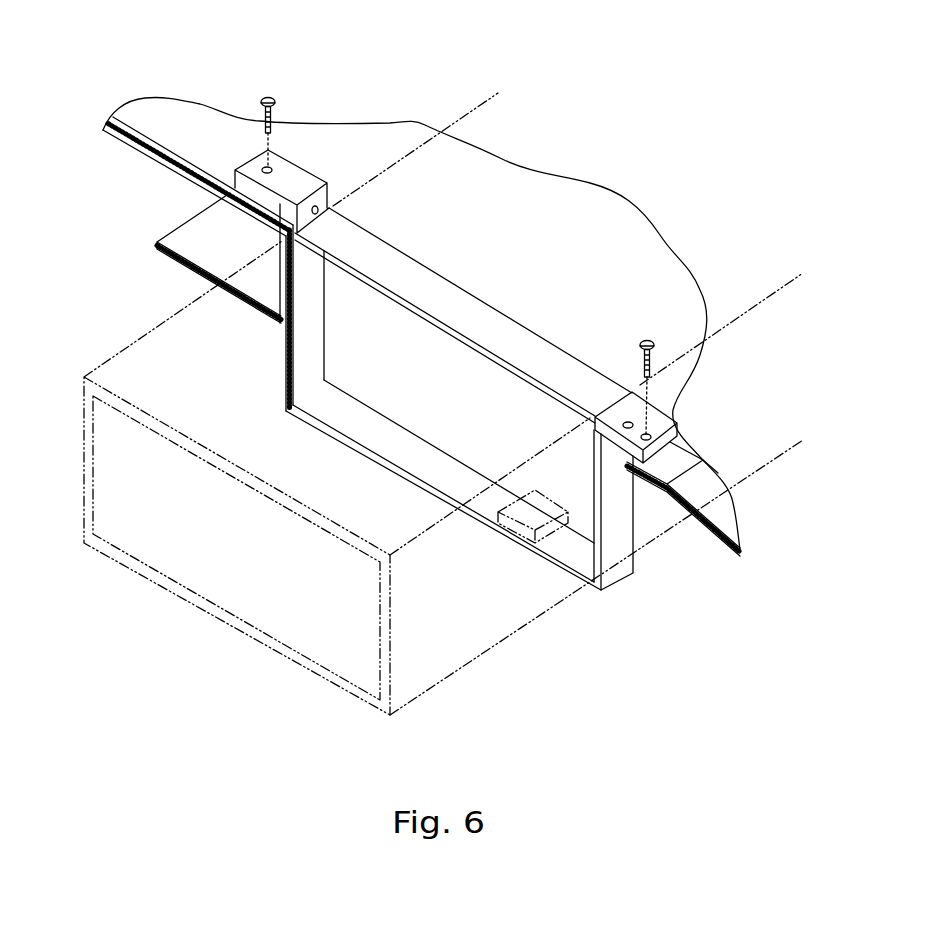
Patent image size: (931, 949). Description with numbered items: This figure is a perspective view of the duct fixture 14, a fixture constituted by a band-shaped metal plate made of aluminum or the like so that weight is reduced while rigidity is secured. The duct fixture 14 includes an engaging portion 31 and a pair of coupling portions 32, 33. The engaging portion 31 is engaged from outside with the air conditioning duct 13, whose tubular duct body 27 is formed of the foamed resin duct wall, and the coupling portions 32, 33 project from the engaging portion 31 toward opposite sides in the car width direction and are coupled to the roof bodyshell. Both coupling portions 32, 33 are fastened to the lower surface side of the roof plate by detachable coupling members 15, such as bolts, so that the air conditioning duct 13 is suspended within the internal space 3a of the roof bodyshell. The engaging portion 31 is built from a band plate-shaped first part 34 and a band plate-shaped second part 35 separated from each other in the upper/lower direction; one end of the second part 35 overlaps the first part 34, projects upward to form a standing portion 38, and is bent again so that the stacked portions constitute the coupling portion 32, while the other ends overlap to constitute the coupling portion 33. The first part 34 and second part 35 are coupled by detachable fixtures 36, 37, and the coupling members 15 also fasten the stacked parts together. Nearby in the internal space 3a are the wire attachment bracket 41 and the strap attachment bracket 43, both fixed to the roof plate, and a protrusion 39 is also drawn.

The internal space 3a is at (67, 236).
The air conditioning duct 13 is at (443, 444).
The duct fixture 14 is at (403, 332).
The coupling member 15 is at (265, 97).
The duct body 27 is at (500, 612).
The engaging portion 31 is at (625, 520).
The coupling portion 32 is at (349, 139).
The coupling portion 33 is at (667, 376).
The first part 34 is at (287, 377).
The second part 35 is at (385, 297).
The fixture 36 is at (332, 232).
The fixture 37 is at (627, 420).
The standing portion 38 is at (332, 207).
The protrusion 39 is at (522, 523).
The wire attachment bracket 41 is at (177, 127).
The strap attachment bracket 43 is at (723, 508).